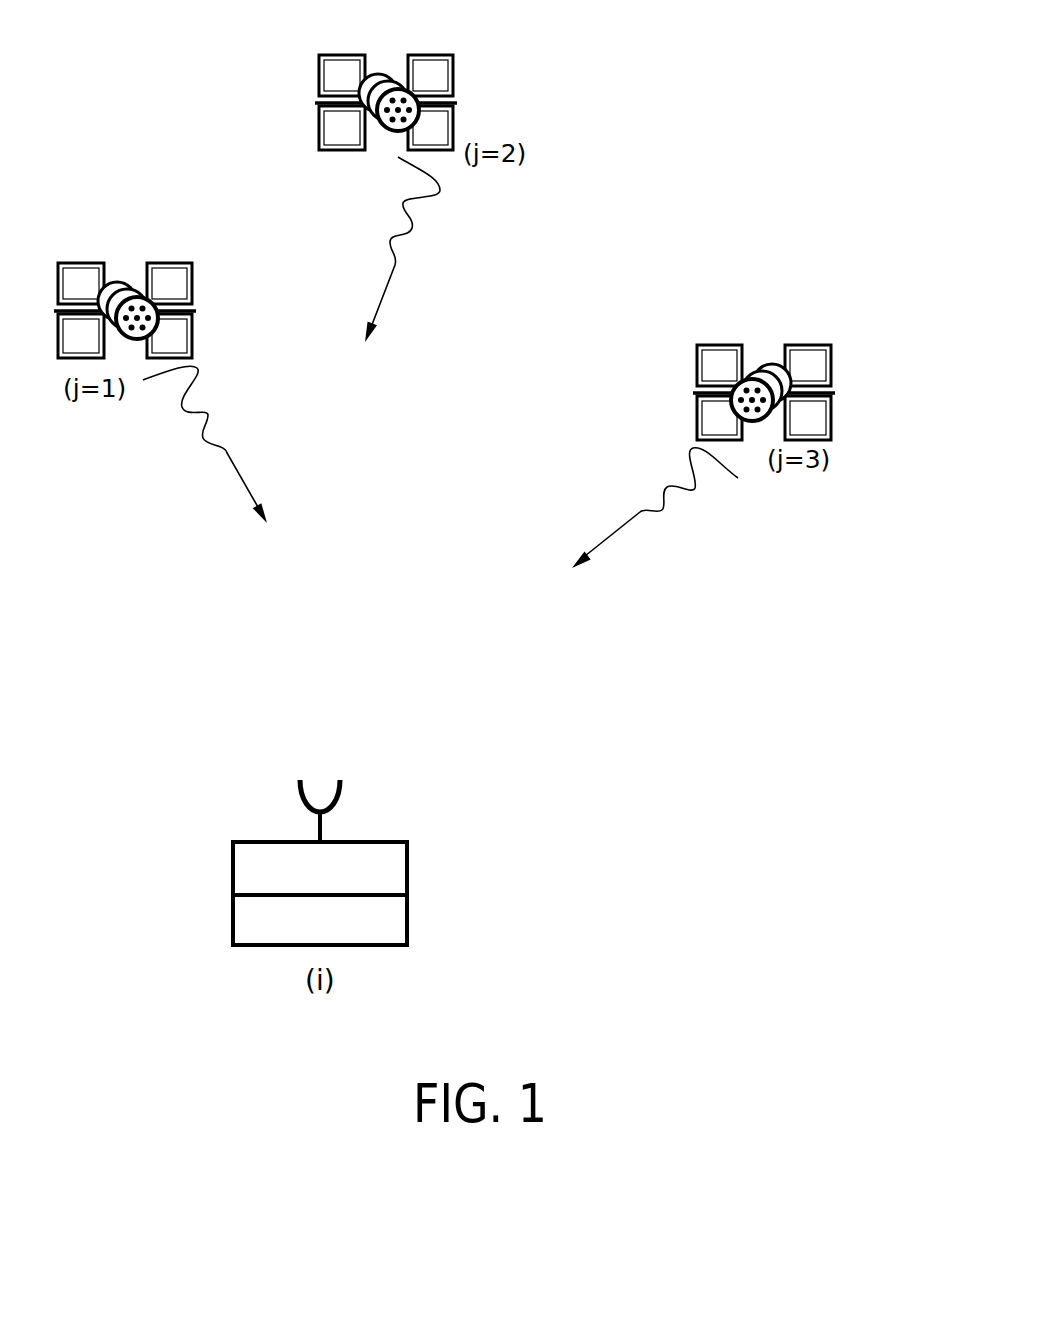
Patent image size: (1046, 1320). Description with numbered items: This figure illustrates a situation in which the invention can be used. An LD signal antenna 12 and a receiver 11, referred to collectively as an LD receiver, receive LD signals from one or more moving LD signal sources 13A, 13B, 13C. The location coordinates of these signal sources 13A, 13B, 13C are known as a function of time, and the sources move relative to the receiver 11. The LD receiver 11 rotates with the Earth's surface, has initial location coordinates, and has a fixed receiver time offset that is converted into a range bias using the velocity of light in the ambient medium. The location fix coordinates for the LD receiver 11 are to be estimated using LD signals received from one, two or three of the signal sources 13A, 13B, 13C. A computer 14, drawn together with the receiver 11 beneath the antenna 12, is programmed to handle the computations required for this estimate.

The LD signal source 13A is at (150, 300).
The LD signal source 13B is at (410, 90).
The LD signal source 13C is at (787, 382).
The receiver 11 is at (385, 865).
The LD signal antenna 12 is at (323, 822).
The computer 14 is at (383, 913).